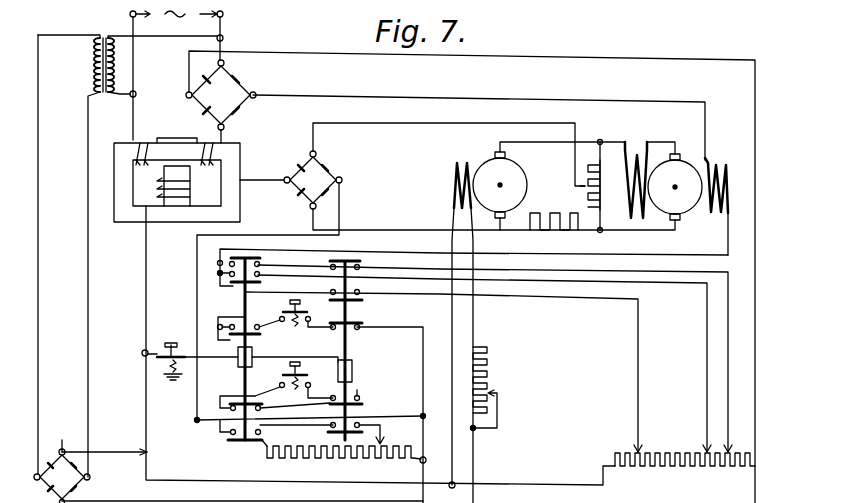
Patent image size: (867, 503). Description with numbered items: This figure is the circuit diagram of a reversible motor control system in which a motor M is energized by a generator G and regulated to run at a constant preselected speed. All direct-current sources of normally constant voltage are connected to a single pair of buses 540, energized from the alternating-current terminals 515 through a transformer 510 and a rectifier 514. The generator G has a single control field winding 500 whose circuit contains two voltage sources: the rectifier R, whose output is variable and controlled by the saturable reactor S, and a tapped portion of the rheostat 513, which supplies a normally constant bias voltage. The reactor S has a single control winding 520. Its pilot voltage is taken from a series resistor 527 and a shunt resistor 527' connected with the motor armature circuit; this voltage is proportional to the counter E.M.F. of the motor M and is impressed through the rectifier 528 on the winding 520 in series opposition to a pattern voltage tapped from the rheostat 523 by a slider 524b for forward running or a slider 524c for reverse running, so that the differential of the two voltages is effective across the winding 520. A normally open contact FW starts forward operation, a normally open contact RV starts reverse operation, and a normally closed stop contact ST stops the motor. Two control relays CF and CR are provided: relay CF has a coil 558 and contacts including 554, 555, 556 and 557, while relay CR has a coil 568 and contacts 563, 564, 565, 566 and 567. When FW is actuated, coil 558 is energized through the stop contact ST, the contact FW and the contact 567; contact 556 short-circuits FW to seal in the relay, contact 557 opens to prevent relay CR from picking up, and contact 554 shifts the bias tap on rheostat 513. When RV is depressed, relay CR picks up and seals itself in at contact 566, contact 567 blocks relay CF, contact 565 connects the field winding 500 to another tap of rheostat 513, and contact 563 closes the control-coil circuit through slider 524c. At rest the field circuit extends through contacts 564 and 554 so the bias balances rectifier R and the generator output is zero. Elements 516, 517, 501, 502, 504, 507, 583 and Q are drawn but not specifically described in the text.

The alternating-current terminals 515 is at (130, 14).
The transformer 510 is at (127, 256).
The rectifier R is at (258, 84).
The reactor windings 516 is at (145, 150).
The saturable reactor 517 is at (126, 225).
The saturable reactor S is at (178, 248).
The control winding 520 is at (178, 205).
The rectifier 528 is at (292, 200).
The motor armature 501 is at (520, 180).
The motor M is at (486, 176).
The motor field winding 502 is at (456, 180).
The series resistor 527 is at (554, 233).
The shunt resistor 527' is at (570, 186).
The generator armature 504 is at (686, 212).
The generator G is at (684, 166).
The generator field winding 507 is at (628, 212).
The control field winding 500 is at (724, 175).
The control relay CF is at (236, 349).
The control relay CR is at (378, 355).
The contact 554 is at (258, 268).
The contact 555 is at (262, 278).
The relay contact 556 is at (242, 322).
The contact 557 is at (270, 409).
The coil 558 is at (254, 352).
The contacts 583 is at (228, 434).
The contact 564 is at (360, 269).
The contact 565 is at (360, 298).
The contact 567 is at (362, 325).
The coil 568 is at (354, 370).
The contact 566 is at (360, 393).
The contact 563 is at (332, 434).
The slider 524b is at (265, 446).
The slider 524c is at (382, 432).
The rheostat 523 is at (385, 470).
The rheostat 513 is at (685, 469).
The rectifier 514 is at (72, 439).
The buses 540 is at (118, 462).
The control contact FW is at (280, 306).
The control contact RV is at (294, 379).
The control contact ST is at (180, 342).
The terminal Q is at (426, 458).